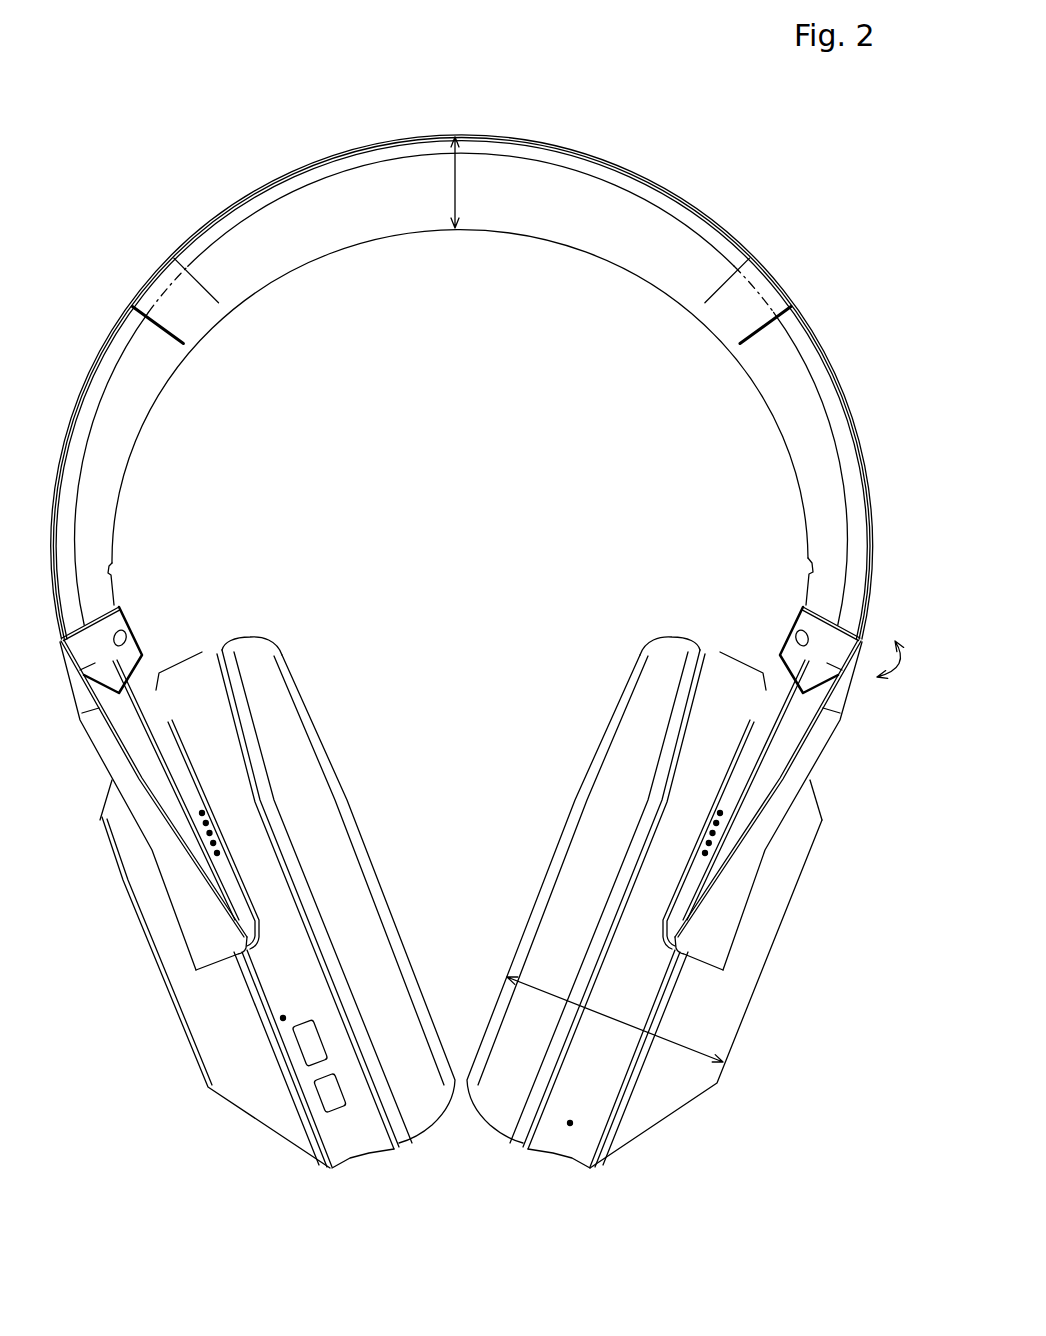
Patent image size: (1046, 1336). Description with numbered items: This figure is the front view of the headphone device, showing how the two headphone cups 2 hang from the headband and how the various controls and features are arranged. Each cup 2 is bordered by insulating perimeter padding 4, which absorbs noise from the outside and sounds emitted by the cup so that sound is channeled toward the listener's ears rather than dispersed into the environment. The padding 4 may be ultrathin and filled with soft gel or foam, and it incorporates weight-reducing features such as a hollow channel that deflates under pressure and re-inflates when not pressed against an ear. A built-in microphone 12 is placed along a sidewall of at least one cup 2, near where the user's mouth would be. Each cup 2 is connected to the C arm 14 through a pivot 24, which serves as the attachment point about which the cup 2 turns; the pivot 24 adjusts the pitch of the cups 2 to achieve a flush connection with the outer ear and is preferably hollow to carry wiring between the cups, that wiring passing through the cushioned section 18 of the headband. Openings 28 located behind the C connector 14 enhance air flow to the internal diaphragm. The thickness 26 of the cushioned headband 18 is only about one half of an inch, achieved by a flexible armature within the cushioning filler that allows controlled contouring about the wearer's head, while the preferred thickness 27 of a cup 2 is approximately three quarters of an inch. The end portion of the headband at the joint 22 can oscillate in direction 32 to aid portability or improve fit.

The headphone cup 2 is at (255, 636).
The insulating perimeter padding 4 is at (343, 852).
The built-in microphone 12 is at (572, 1110).
The C arm 14 is at (823, 733).
The cushioned section of the headband 18 is at (510, 240).
The headband hinge joint 22 is at (801, 296).
The pivot 24 is at (706, 921).
The thickness of the cushioned headband 26 is at (457, 186).
The thickness of a cup 27 is at (548, 992).
The openings 28 is at (722, 796).
The direction of oscillation 32 is at (905, 670).